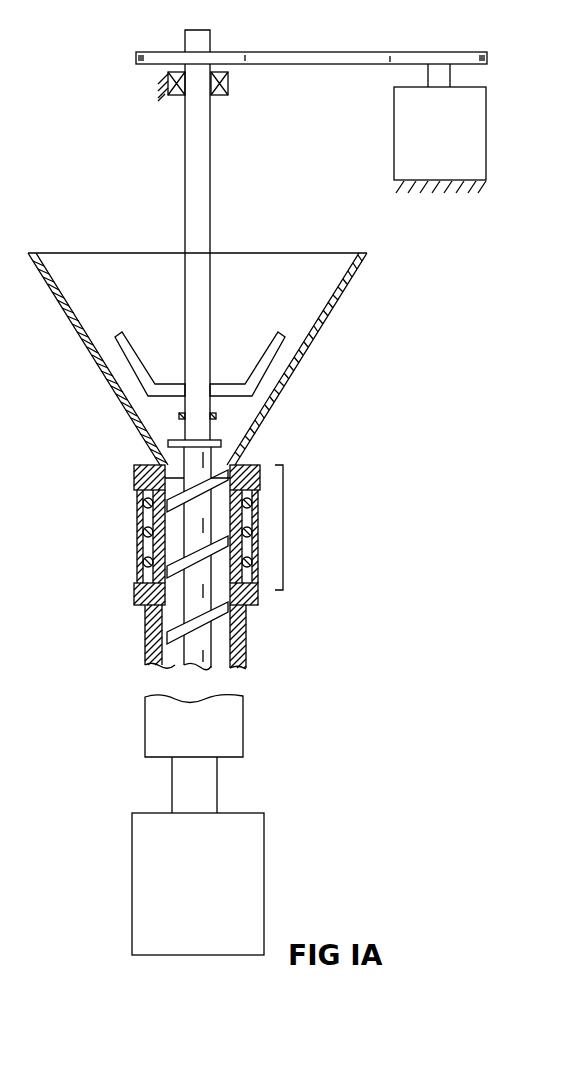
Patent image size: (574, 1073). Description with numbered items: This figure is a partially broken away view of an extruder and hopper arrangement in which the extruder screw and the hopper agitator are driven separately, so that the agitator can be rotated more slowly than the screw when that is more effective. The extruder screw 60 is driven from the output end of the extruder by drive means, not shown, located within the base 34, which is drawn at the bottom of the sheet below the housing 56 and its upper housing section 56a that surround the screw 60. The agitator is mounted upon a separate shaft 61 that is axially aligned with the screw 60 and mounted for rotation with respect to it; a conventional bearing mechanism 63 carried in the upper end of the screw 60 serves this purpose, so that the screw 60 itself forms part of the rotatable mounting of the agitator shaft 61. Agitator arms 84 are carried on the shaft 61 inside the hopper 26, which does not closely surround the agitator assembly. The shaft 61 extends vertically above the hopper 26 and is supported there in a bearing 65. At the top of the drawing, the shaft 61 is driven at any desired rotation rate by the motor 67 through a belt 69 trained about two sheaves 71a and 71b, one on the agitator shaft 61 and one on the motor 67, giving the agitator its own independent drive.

The sheave 71a is at (222, 62).
The sheave 71b is at (412, 62).
The bearing 65 is at (229, 82).
The belt 69 is at (328, 66).
The motor 67 is at (394, 128).
The shaft 61 is at (202, 205).
The hopper 26 is at (318, 310).
The agitator arm 84 is at (268, 348).
The bearing mechanism 63 is at (216, 418).
The extruder screw 60 is at (205, 435).
The auger housing 56 is at (136, 624).
The upper housing section 56a is at (283, 523).
The base 34 is at (264, 872).